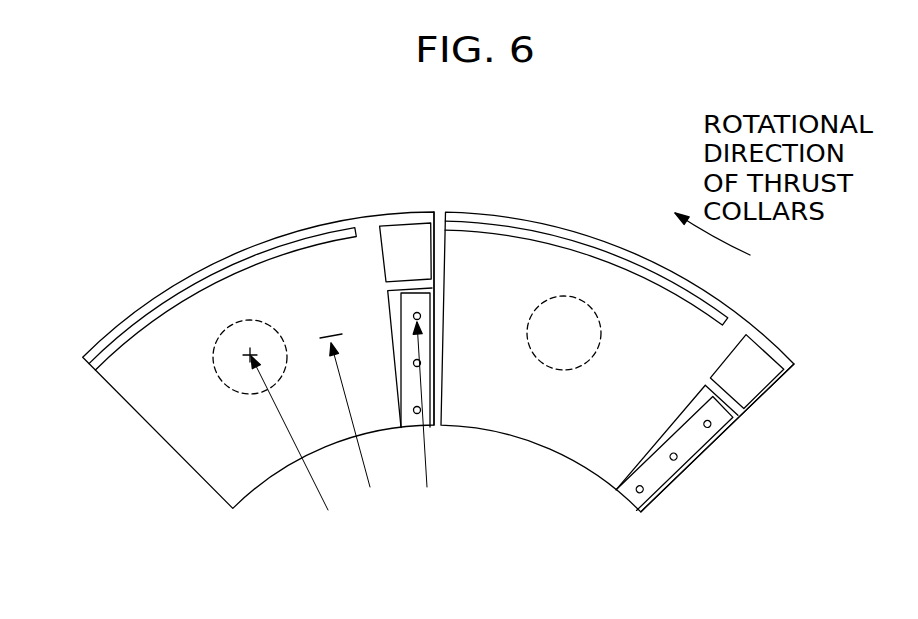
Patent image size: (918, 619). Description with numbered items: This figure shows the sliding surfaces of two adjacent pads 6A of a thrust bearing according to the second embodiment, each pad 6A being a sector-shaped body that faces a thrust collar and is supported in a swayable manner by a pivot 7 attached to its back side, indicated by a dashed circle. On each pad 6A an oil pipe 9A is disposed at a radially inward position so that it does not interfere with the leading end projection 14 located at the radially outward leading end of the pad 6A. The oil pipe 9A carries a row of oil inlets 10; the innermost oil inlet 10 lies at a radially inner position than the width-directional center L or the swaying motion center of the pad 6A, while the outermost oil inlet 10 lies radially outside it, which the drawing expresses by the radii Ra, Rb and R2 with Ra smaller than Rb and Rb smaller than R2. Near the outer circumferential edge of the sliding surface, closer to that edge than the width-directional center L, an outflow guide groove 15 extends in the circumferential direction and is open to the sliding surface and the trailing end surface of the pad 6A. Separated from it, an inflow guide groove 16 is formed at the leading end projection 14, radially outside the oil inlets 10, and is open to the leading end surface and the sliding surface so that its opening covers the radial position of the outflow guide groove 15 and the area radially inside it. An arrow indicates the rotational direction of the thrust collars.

The pad 6A is at (183, 272).
The pivot 7 is at (258, 320).
The outflow guide groove 15 is at (328, 233).
The inflow guide groove 16 is at (407, 228).
The leading end projection 14 is at (438, 250).
The oil pipe 9A is at (413, 433).
The oil inlet 10 is at (421, 362).
The radius of the innermost oil inlet Ra is at (350, 415).
The radius of the width-directional center Rb is at (289, 433).
The radius of the outermost oil inlet R2 is at (438, 404).
The width-directional center L is at (341, 335).